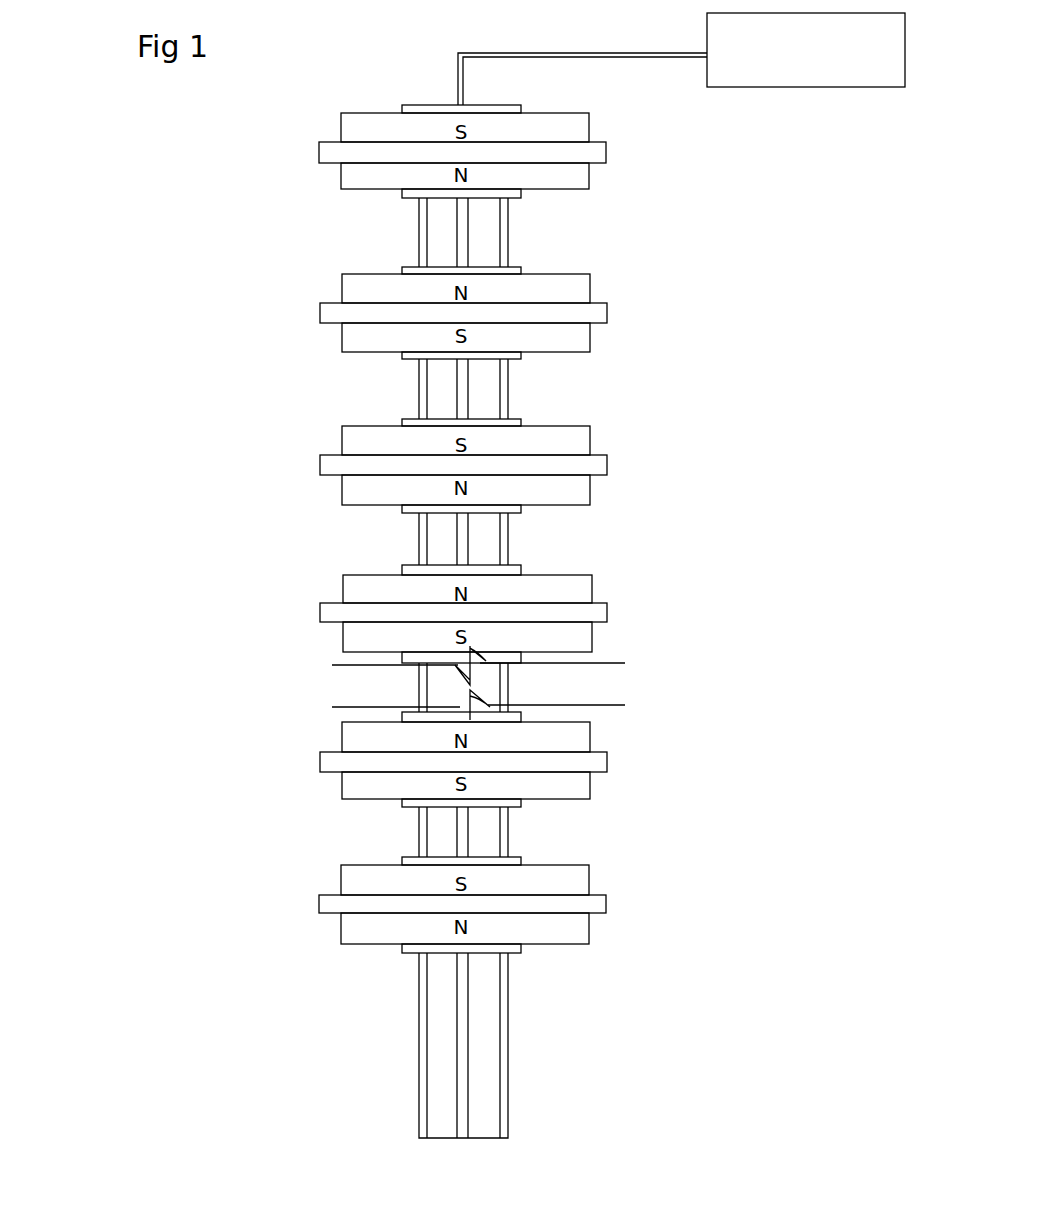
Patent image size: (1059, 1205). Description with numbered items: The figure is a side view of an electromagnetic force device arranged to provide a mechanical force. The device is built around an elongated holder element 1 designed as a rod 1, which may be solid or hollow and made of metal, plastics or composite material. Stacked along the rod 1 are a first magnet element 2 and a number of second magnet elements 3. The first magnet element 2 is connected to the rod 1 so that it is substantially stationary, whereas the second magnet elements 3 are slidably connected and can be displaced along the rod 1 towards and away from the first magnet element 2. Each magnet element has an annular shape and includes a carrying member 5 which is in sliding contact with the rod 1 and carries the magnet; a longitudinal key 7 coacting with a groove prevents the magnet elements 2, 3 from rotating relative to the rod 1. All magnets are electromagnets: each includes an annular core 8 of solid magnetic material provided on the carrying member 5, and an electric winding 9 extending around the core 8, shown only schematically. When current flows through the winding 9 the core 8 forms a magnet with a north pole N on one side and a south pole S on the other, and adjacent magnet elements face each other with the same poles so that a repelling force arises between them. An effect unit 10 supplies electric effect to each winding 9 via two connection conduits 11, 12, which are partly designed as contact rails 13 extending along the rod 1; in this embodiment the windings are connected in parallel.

The elongated holder element 1 is at (425, 532).
The first magnet element 2 is at (340, 125).
The second magnet element 3 is at (341, 292).
The carrying member 5 is at (410, 197).
The longitudinal key 7 is at (418, 1017).
The annular core 8 is at (378, 178).
The electric winding 9 is at (335, 152).
The effect unit 10 is at (785, 62).
The connection conduit 11 is at (585, 57).
The connection conduit 12 is at (628, 53).
The contact rail 13 is at (460, 1073).